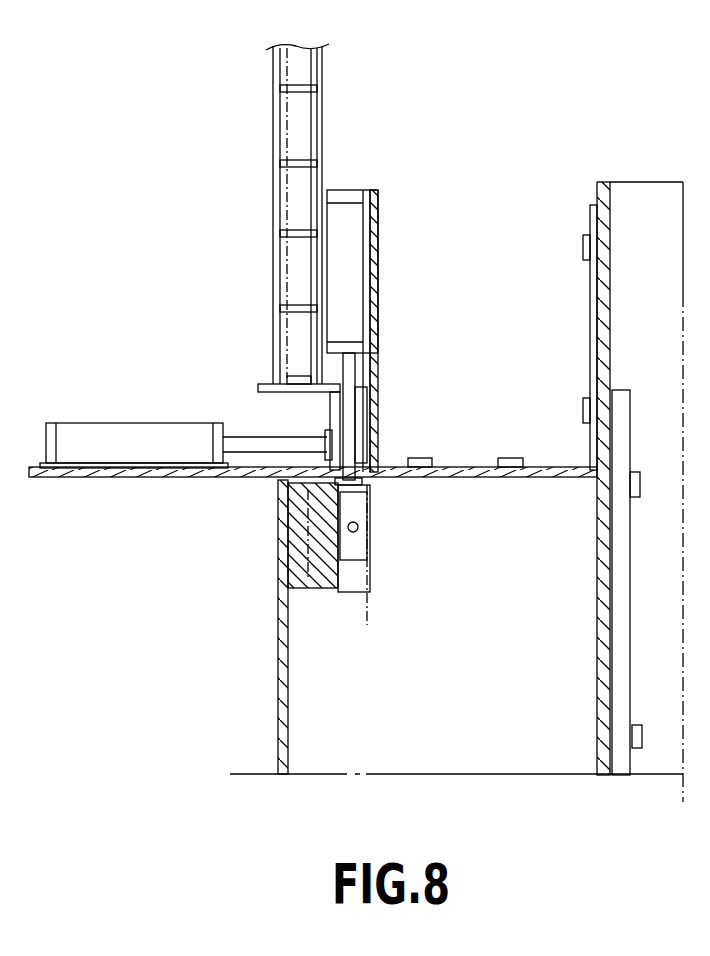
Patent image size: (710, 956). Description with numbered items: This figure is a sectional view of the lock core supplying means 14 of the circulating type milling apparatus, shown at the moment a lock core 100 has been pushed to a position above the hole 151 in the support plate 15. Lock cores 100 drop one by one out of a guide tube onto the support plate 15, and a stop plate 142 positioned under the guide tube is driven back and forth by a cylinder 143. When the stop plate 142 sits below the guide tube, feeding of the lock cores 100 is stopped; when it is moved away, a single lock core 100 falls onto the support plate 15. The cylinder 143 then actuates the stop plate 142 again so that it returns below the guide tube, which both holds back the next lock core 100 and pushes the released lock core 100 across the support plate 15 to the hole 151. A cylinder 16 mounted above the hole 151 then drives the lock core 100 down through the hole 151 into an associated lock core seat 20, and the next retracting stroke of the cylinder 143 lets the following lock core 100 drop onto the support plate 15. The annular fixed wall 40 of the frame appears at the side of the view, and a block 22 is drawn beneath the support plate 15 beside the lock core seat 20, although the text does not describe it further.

The lock core supplying means 14 is at (152, 224).
The lock core 100 is at (292, 158).
The cylinder 16 is at (362, 192).
The stop plate 142 is at (252, 385).
The hole 151 is at (372, 465).
The cylinder 143 is at (122, 435).
The support plate 15 is at (567, 470).
The lock core seat 20 is at (280, 700).
The support block 22 is at (327, 600).
The annular fixed wall 40 is at (612, 195).